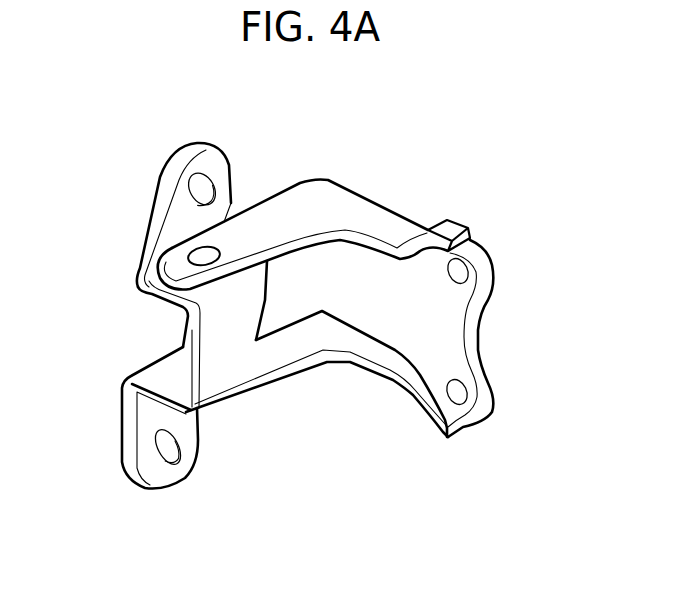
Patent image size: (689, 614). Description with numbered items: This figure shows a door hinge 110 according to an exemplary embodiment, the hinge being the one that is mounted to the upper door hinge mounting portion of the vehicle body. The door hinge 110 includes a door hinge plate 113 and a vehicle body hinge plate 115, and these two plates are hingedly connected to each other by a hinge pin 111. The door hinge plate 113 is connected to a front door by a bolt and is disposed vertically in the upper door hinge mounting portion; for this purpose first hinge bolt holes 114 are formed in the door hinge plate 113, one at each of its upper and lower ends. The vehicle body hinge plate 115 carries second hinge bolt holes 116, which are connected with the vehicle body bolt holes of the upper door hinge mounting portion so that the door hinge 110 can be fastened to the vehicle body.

The door hinge 110 is at (377, 178).
The hinge pin 111 is at (208, 252).
The door hinge plate 113 is at (174, 225).
The first hinge bolt hole 114 is at (193, 195).
The vehicle body hinge plate 115 is at (442, 323).
The second hinge bolt hole 116 is at (460, 278).